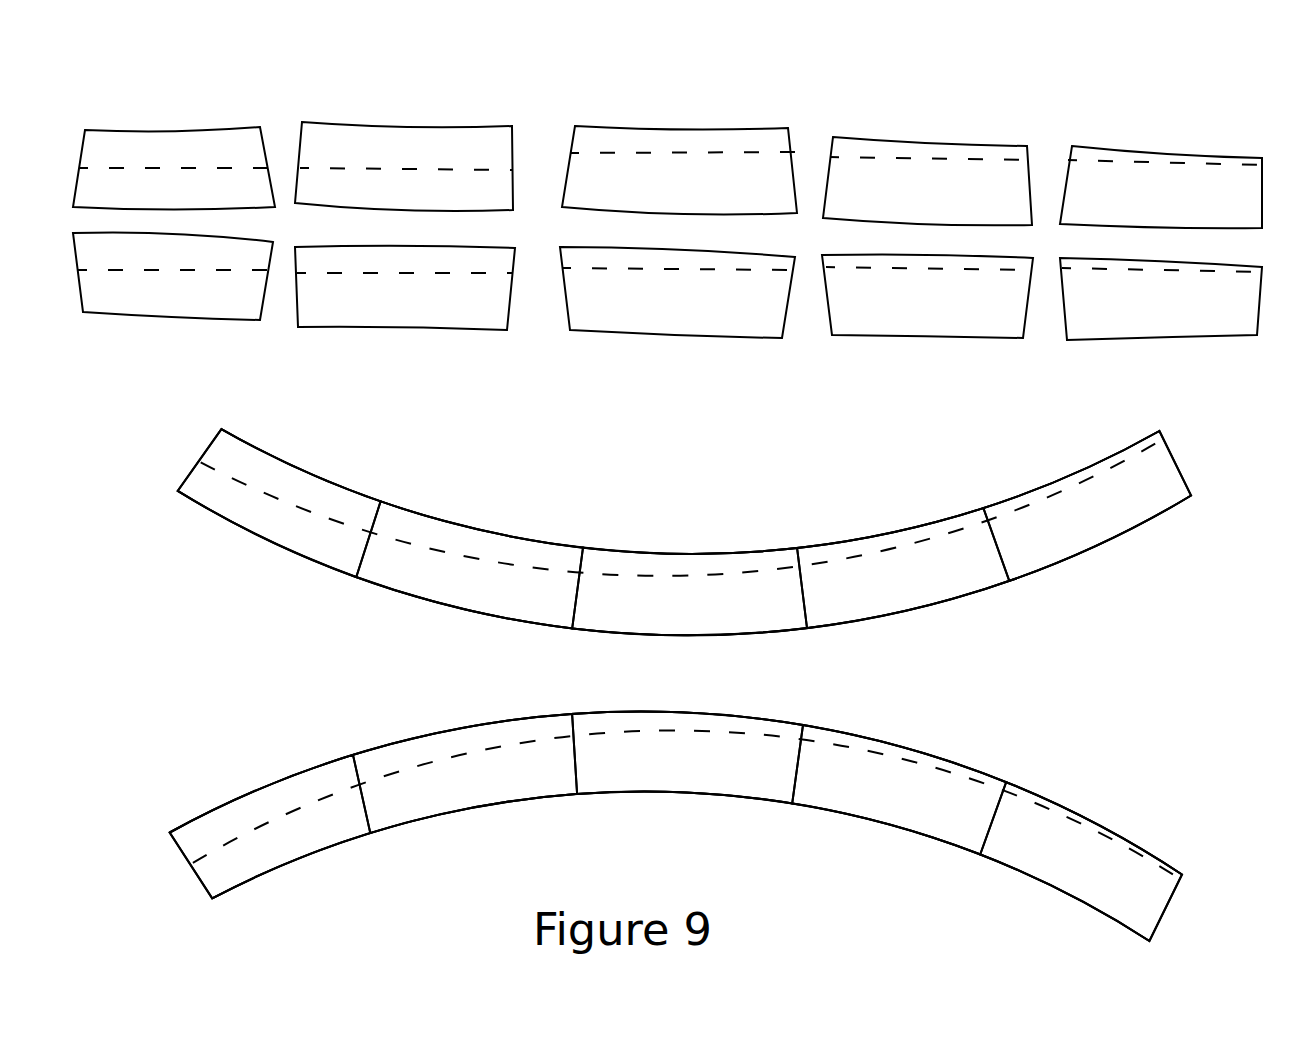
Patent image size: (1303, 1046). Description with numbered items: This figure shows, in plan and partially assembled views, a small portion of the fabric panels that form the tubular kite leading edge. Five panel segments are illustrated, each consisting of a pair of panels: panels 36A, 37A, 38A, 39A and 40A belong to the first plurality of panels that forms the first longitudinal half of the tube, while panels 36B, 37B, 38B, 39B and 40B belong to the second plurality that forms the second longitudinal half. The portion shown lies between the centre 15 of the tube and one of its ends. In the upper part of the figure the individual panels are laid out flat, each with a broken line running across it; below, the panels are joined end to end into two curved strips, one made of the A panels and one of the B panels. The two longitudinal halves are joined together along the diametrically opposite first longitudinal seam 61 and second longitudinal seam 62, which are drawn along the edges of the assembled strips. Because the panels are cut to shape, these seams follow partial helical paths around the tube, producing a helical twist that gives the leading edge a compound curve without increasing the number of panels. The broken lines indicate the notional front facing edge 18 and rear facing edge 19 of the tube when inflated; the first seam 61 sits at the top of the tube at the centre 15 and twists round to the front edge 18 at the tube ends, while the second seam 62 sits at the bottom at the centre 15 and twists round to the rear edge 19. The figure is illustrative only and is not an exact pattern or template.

The centre of the tube 15 is at (166, 508).
The front facing edge 18 is at (426, 752).
The rear facing edge 19 is at (486, 573).
The panel 36A is at (135, 293).
The panel 36B is at (173, 148).
The panel 37A is at (407, 300).
The panel 37B is at (405, 180).
The panel 38A is at (632, 293).
The panel 38B is at (633, 168).
The panel 39A is at (880, 298).
The panel 39B is at (883, 183).
The panel 40A is at (1147, 300).
The panel 40B is at (1153, 192).
The first longitudinal seam 61 is at (977, 592).
The second longitudinal seam 62 is at (473, 528).